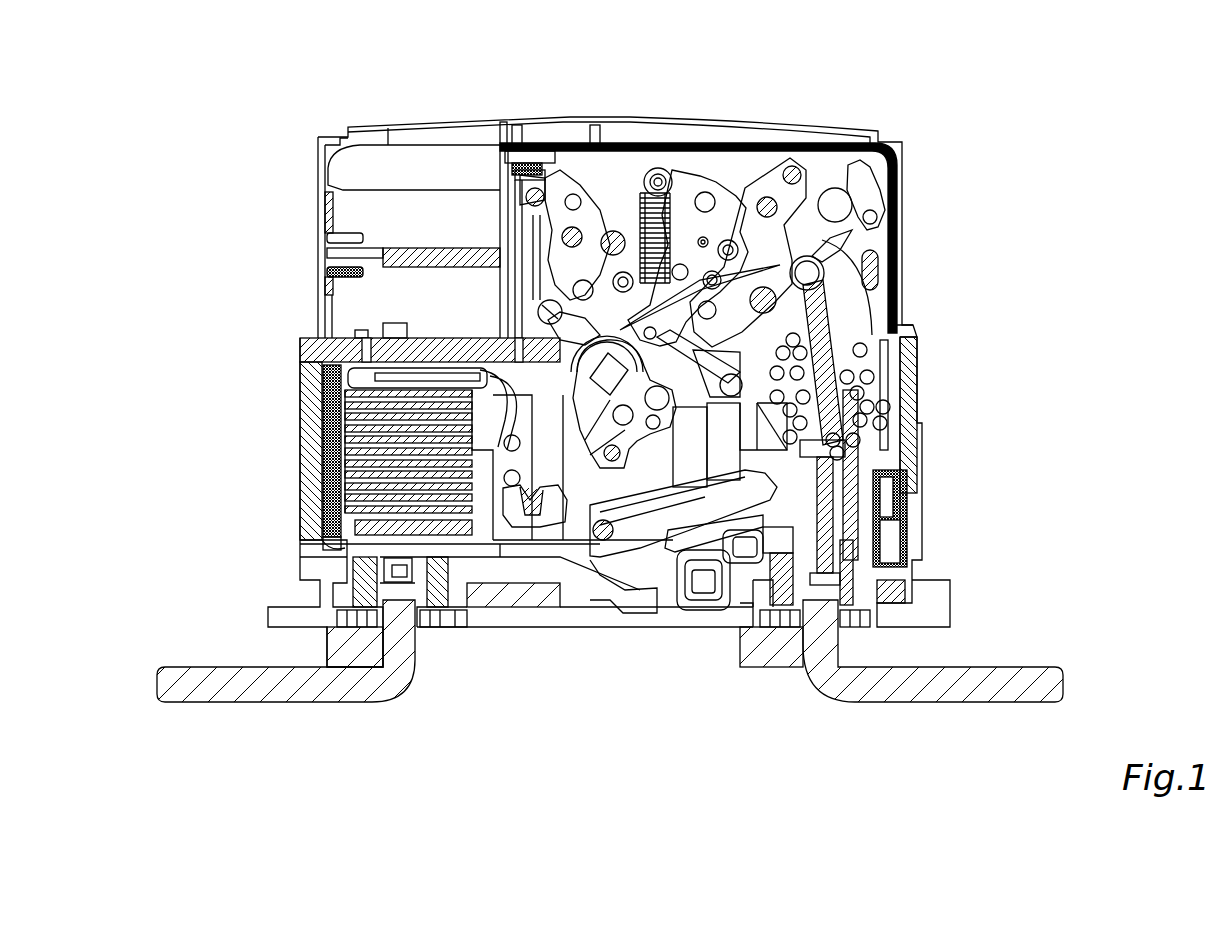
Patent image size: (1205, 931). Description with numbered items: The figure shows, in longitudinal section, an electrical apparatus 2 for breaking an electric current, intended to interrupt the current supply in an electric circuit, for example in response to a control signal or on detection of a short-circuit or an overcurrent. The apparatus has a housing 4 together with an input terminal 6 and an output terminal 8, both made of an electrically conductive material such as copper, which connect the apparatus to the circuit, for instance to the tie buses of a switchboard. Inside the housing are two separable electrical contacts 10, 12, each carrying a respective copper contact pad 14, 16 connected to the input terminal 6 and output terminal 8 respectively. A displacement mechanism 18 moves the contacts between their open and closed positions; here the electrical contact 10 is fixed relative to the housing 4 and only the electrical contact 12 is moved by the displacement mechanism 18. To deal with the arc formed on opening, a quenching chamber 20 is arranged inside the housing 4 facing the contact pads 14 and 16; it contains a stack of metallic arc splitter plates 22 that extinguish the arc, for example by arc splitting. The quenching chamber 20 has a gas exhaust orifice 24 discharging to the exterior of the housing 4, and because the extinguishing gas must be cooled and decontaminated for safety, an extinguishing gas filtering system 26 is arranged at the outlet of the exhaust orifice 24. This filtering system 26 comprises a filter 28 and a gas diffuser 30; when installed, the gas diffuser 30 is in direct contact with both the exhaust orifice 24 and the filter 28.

The electrical apparatus 2 is at (240, 124).
The housing 4 is at (815, 124).
The input terminal 6 is at (234, 683).
The output terminal 8 is at (955, 688).
The electrical contact 10 is at (455, 567).
The electrical contact 12 is at (601, 563).
The contact pad 14 is at (536, 570).
The contact pad 16 is at (565, 565).
The displacement mechanism 18 is at (852, 232).
The quenching chamber 20 is at (300, 342).
The arc splitter plates 22 is at (318, 392).
The gas exhaust orifice 24 is at (360, 452).
The extinguishing gas filtering system 26 is at (210, 490).
The filter 28 is at (317, 490).
The gas diffuser 30 is at (318, 548).